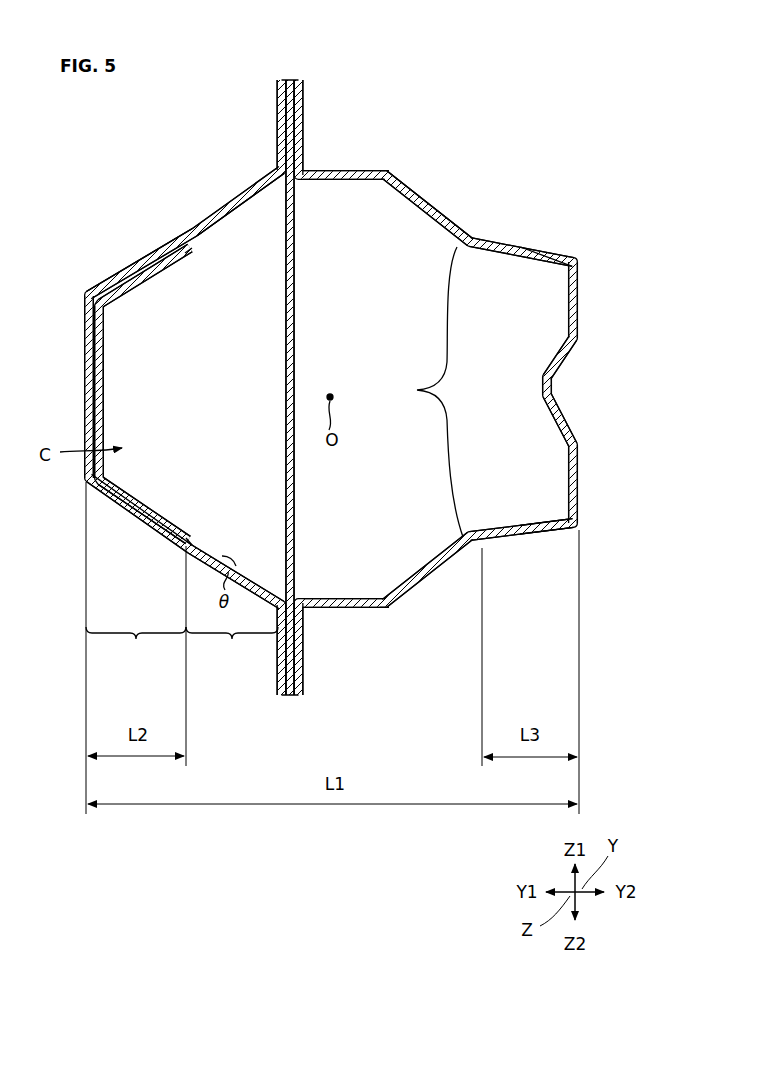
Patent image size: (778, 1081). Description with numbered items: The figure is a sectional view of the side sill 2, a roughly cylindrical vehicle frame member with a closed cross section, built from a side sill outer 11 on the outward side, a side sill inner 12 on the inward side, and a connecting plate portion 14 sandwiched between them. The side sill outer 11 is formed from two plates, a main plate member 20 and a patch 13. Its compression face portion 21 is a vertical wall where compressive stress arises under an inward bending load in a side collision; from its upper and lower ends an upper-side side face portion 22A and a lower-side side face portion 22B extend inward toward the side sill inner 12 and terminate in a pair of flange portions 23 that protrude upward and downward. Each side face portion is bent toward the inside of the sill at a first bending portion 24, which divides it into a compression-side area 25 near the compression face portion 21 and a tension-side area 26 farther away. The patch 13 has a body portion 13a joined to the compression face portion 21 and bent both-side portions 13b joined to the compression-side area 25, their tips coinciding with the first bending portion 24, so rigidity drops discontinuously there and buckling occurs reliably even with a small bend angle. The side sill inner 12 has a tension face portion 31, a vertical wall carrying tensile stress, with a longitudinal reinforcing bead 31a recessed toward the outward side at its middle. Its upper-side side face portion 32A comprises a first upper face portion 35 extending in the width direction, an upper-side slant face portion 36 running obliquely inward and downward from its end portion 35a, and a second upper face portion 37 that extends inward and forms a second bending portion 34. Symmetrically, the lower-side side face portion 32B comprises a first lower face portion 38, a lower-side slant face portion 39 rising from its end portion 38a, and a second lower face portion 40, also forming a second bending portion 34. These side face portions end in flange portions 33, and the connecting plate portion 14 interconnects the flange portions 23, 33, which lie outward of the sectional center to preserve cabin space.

The side sill 2 is at (632, 138).
The side sill outer 11 is at (182, 211).
The side sill inner 12 is at (443, 189).
The patch 13 is at (105, 346).
The body portion 13a is at (105, 418).
The both-side portions 13b is at (146, 280).
The connecting plate portion 14 is at (295, 346).
The main plate member 20 is at (208, 216).
The compression face portion 21 is at (84, 384).
The upper-side side face portion 22A is at (224, 201).
The lower-side side face portion 22B is at (256, 580).
The flange portions 23 is at (277, 104).
The first bending portion 24 is at (181, 237).
The compression-side area 25 is at (136, 646).
The tension-side area 26 is at (232, 646).
The tension face portion 31 is at (580, 294).
The bead 31a is at (565, 388).
The upper-side side face portion 32A is at (478, 227).
The lower-side side face portion 32B is at (488, 558).
The flange portions 33 is at (303, 104).
The second bending portion 34 is at (427, 392).
The first upper face portion 35 is at (332, 169).
The end portion 35a is at (392, 168).
The upper-side slant face portion 36 is at (428, 206).
The second upper face portion 37 is at (531, 242).
The first lower face portion 38 is at (338, 609).
The end portion 38a is at (386, 609).
The lower-side slant face portion 39 is at (422, 566).
The second lower face portion 40 is at (527, 543).